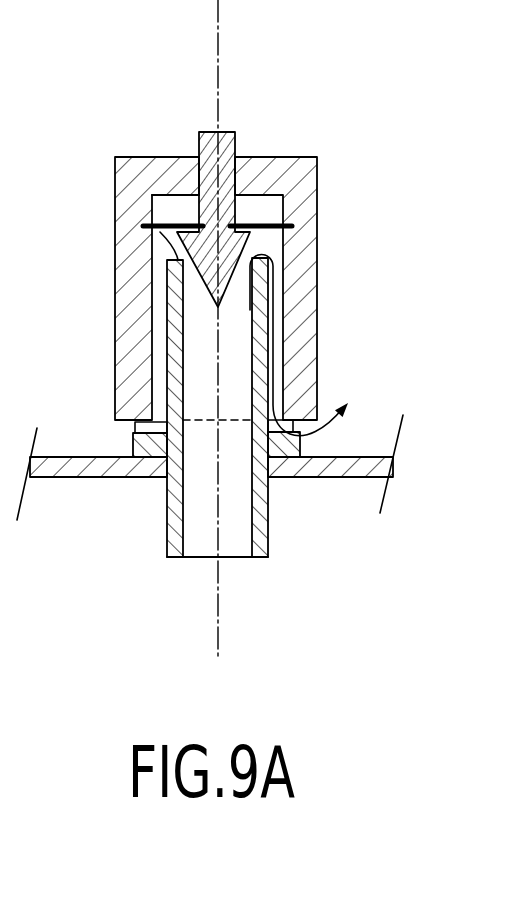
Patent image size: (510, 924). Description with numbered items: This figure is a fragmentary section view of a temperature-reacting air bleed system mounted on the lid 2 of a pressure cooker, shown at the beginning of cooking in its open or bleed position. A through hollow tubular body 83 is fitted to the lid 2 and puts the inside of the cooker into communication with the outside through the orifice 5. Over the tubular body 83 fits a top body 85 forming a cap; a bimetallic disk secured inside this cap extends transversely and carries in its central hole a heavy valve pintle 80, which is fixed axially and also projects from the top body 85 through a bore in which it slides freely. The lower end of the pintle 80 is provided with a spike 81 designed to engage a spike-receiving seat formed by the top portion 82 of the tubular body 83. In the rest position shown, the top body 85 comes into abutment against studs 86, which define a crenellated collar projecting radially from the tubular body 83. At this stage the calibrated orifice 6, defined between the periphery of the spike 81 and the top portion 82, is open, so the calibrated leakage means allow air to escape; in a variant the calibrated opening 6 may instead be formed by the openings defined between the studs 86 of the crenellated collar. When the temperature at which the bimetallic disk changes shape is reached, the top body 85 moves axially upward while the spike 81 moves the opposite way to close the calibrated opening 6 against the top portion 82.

The lid 2 is at (60, 458).
The orifice 5 is at (203, 536).
The calibrated orifice 6 is at (170, 157).
The heavy valve pintle 80 is at (242, 120).
The spike 81 is at (210, 278).
The top portion 82 is at (150, 232).
The tubular body 83 is at (160, 352).
The top body 85 is at (322, 200).
The studs 86 is at (153, 433).